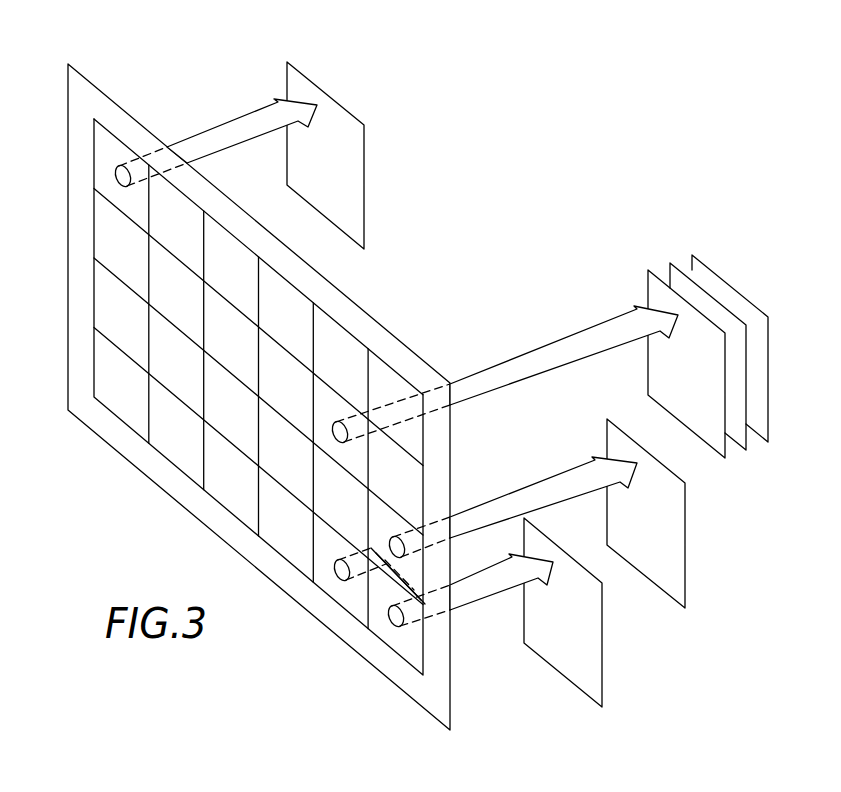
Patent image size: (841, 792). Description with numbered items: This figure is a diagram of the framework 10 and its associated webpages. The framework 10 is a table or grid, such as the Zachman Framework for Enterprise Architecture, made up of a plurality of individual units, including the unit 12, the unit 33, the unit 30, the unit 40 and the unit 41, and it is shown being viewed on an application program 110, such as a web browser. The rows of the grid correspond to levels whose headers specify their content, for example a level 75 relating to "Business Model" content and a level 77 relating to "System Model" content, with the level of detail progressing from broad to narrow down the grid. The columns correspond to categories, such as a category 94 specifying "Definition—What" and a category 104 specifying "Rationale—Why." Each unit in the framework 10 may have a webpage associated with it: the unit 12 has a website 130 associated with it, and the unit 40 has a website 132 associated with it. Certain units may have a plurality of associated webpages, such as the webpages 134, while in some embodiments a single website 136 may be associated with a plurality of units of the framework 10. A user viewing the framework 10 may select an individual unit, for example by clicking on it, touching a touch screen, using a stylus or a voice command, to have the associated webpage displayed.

The framework 10 is at (236, 387).
The unit 12 is at (235, 397).
The level 75 is at (86, 225).
The level 77 is at (86, 295).
The category 94 is at (120, 132).
The category 104 is at (395, 365).
The application program 110 is at (82, 75).
The unit 33 is at (330, 407).
The unit 40 is at (380, 523).
The unit 30 is at (328, 545).
The unit 41 is at (380, 625).
The website 130 is at (364, 143).
The website 132 is at (685, 528).
The webpages 134 is at (740, 282).
The website 136 is at (602, 676).